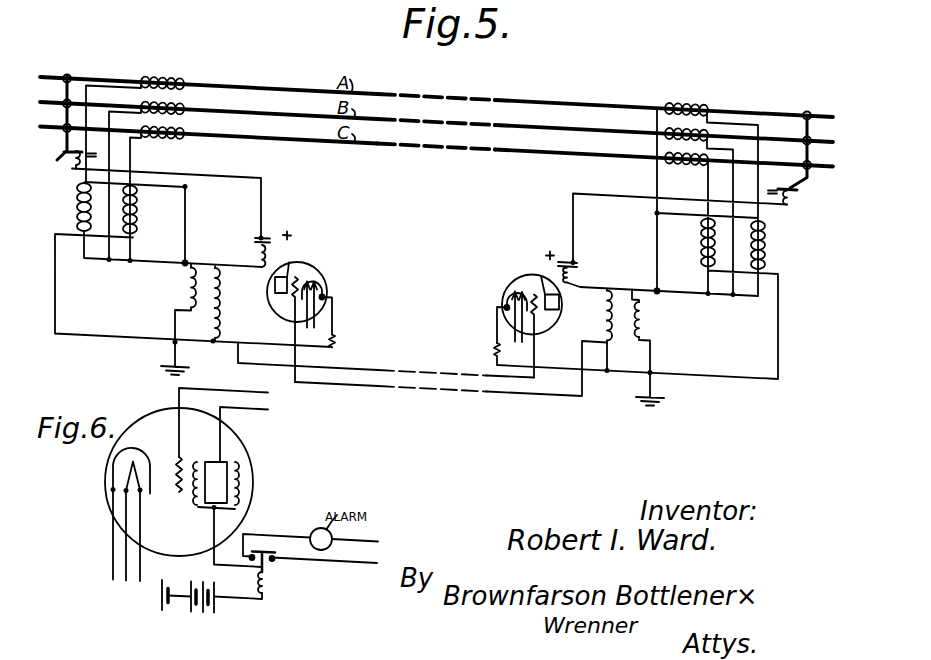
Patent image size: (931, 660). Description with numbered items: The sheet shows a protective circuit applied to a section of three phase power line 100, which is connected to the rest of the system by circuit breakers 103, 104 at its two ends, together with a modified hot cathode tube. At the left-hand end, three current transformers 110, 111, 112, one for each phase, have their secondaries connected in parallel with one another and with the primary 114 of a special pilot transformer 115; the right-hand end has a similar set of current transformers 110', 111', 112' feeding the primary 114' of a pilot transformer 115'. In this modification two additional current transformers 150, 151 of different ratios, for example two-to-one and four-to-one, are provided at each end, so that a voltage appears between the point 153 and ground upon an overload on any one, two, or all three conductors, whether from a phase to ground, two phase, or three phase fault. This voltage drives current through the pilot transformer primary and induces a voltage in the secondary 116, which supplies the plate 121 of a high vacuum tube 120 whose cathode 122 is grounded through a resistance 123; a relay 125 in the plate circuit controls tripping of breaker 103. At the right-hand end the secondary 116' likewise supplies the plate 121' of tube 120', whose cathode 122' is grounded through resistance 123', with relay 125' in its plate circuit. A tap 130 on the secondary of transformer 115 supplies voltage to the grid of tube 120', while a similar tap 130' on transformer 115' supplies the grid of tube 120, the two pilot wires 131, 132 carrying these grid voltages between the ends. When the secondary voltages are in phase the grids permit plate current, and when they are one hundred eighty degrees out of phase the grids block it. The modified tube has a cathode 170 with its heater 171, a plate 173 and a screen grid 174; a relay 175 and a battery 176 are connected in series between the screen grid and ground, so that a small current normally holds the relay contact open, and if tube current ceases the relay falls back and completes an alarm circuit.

In FIG. 5, the section of three phase power line 100 is at (310, 62).
In FIG. 5, the circuit breaker 103 is at (65, 74).
In FIG. 5, the circuit breaker 104 is at (807, 114).
In FIG. 5, the current transformer 110 is at (188, 63).
In FIG. 5, the current transformer 111 is at (191, 102).
In FIG. 5, the current transformer 112 is at (191, 126).
In FIG. 5, the current transformer 110' is at (670, 99).
In FIG. 5, the current transformer 111' is at (666, 124).
In FIG. 5, the current transformer 112' is at (665, 148).
In FIG. 5, the primary of pilot transformer 114 is at (163, 286).
In FIG. 5, the primary of pilot transformer 114' is at (674, 319).
In FIG. 5, the pilot transformer 115 is at (241, 255).
In FIG. 5, the pilot transformer 115' is at (611, 264).
In FIG. 5, the secondary of pilot transformer 116 is at (241, 288).
In FIG. 5, the secondary of pilot transformer 116' is at (593, 306).
In FIG. 5, the high vacuum tube 120 is at (329, 277).
In FIG. 5, the high vacuum tube 120' is at (520, 278).
In FIG. 5, the plate 121 is at (314, 310).
In FIG. 5, the plate 121' is at (529, 307).
In FIG. 5, the cathode 122 is at (346, 278).
In FIG. 5, the cathode 122' is at (494, 282).
In FIG. 5, the resistance 123 is at (362, 341).
In FIG. 5, the resistance 123' is at (484, 351).
In FIG. 5, the relay 125 is at (304, 226).
In FIG. 5, the relay 125' is at (555, 244).
In FIG. 5, the tap 130 is at (243, 321).
In FIG. 5, the tap 130' is at (588, 331).
In FIG. 5, the pilot wire 131 is at (370, 388).
In FIG. 5, the pilot wire 132 is at (493, 378).
In FIG. 5, the current transformer 150 is at (79, 223).
In FIG. 5, the current transformer 151 is at (136, 212).
In FIG. 5, the point 153 is at (187, 262).
In FIG. 6, the cathode 170 is at (110, 476).
In FIG. 6, the heater 171 is at (178, 455).
In FIG. 6, the plate 173 is at (222, 468).
In FIG. 6, the screen grid 174 is at (238, 487).
In FIG. 6, the relay 175 is at (268, 576).
In FIG. 6, the battery 176 is at (183, 611).